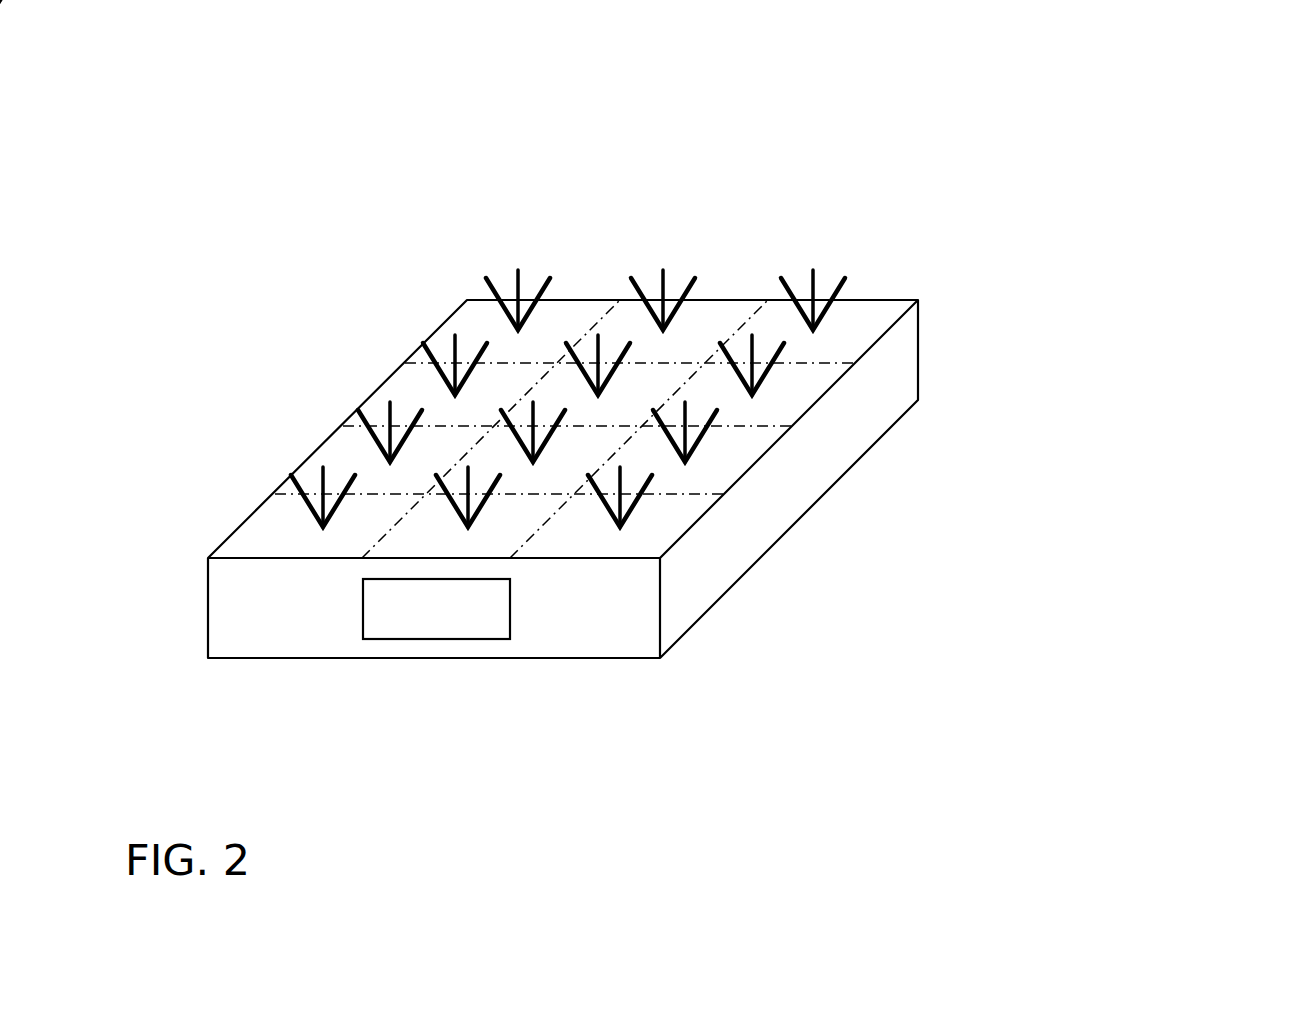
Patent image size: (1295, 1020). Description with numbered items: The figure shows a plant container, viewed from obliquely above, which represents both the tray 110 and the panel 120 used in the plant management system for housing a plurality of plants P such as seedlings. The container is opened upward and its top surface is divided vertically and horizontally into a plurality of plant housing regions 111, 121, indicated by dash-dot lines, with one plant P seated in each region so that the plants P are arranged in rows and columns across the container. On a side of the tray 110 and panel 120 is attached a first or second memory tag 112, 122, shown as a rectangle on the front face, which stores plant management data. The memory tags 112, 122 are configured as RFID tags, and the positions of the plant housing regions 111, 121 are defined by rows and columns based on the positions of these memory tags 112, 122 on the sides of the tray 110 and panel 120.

The tray 110 is at (560, 351).
The panel 120 is at (397, 223).
The plant P is at (678, 267).
The plant housing region 111 is at (768, 461).
The plant housing region 121 is at (657, 522).
The first memory tag 112 is at (529, 698).
The second memory tag 122 is at (438, 615).